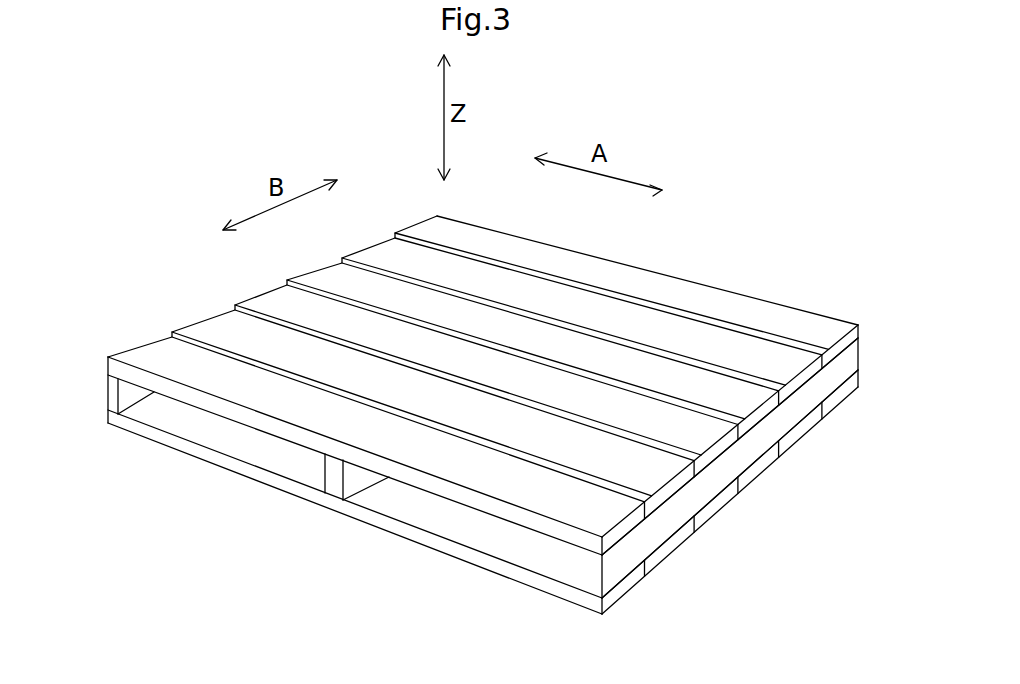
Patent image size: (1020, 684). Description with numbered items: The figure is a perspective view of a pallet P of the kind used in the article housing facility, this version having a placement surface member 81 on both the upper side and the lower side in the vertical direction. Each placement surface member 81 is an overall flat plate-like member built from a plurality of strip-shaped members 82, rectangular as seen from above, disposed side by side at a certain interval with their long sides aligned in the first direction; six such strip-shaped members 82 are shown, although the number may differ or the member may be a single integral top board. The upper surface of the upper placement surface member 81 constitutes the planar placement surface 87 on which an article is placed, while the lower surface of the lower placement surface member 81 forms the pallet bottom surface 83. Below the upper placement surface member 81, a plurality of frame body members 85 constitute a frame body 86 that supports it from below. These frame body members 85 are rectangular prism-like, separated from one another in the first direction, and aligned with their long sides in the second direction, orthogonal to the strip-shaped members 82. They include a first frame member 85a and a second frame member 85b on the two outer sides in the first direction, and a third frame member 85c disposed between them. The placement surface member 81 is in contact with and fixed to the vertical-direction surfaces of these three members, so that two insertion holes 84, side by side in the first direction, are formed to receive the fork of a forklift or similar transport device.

The pallet P is at (697, 247).
The placement surface member 81 is at (464, 442).
The strip-shaped members 82 is at (469, 407).
The pallet bottom surface 83 is at (478, 558).
The insertion holes 84 is at (283, 452).
The frame body members 85 is at (458, 488).
The frame body 86 is at (458, 488).
The first frame member 85a is at (667, 522).
The second frame member 85b is at (130, 393).
The third frame member 85c is at (323, 493).
The placement surface 87 is at (738, 352).